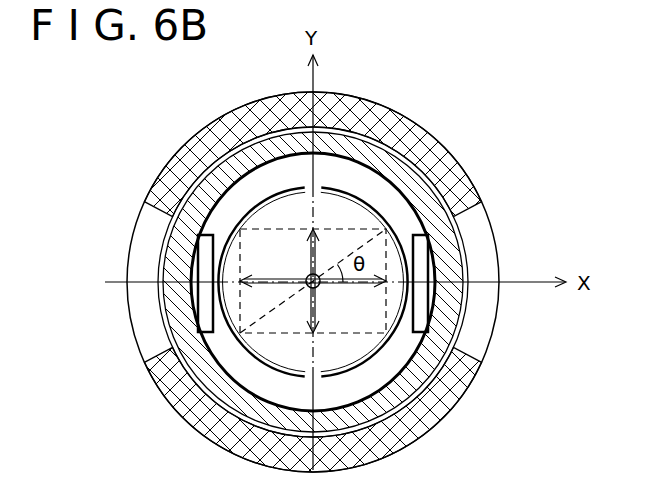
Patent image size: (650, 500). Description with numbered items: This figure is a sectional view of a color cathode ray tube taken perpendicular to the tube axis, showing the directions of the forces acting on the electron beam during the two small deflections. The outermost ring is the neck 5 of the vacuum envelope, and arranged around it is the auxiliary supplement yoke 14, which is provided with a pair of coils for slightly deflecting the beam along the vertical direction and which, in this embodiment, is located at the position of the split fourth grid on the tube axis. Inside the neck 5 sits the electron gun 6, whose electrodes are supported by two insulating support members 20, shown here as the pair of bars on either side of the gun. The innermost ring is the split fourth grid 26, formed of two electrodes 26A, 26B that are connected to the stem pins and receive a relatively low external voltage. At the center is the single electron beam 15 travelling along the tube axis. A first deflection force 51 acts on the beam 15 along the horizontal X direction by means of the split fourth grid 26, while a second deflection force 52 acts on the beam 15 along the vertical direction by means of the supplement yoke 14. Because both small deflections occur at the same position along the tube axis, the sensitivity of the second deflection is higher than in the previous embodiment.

The auxiliary supplement yoke 14 is at (414, 124).
The electron gun 6 is at (193, 153).
The fourth grid 26 is at (364, 314).
The electrode of the fourth grid 26A is at (258, 362).
The electrode of the fourth grid 26B is at (388, 344).
The neck 5 is at (457, 244).
The insulating support members 20 is at (422, 317).
The electron beam 15 is at (308, 277).
The first deflection force 51 is at (272, 287).
The second deflection force 52 is at (222, 180).